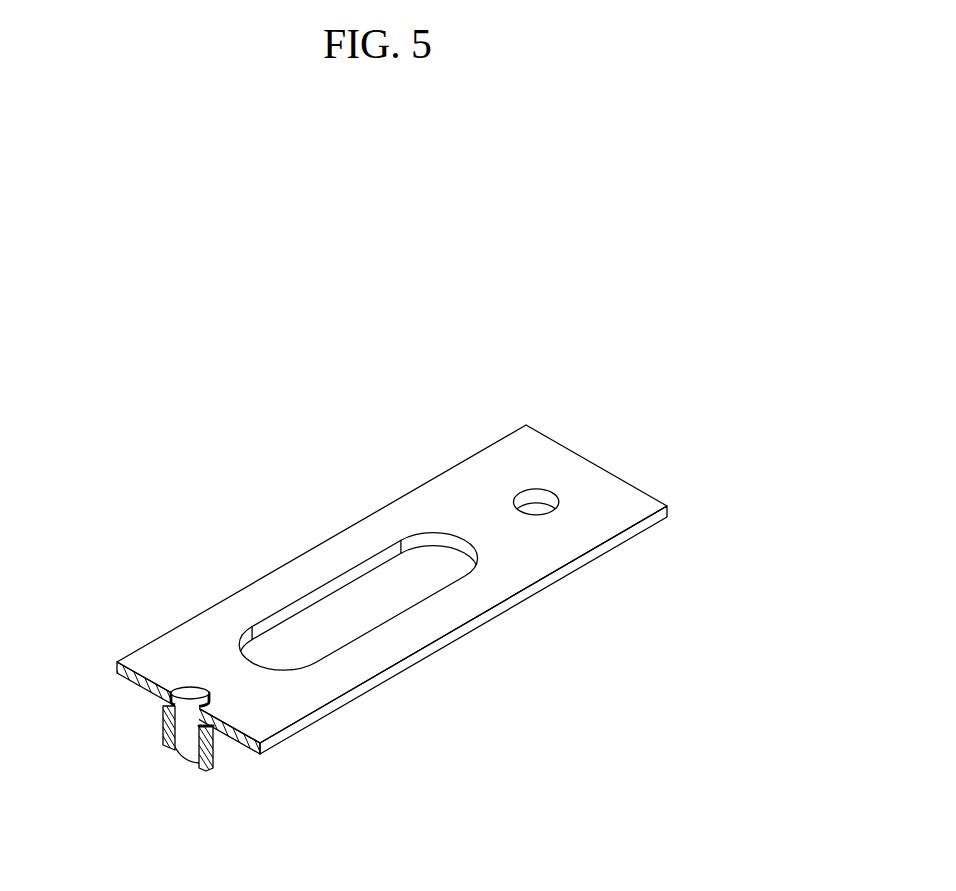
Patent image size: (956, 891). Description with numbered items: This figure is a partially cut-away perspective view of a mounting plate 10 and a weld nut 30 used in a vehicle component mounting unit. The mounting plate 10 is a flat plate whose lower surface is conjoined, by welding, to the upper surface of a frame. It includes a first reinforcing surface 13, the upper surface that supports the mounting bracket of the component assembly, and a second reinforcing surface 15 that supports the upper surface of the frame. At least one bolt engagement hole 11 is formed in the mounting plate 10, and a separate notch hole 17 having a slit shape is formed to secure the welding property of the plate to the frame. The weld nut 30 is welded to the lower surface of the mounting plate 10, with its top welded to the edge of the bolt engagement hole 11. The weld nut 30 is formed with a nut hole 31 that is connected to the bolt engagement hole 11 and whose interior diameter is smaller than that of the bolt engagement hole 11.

The mounting plate 10 is at (388, 569).
The bolt engagement hole 11 is at (188, 688).
The first reinforcing surface 13 is at (428, 508).
The second reinforcing surface 15 is at (467, 637).
The notch hole 17 is at (300, 608).
The weld nut 30 is at (144, 701).
The nut hole 31 is at (187, 742).